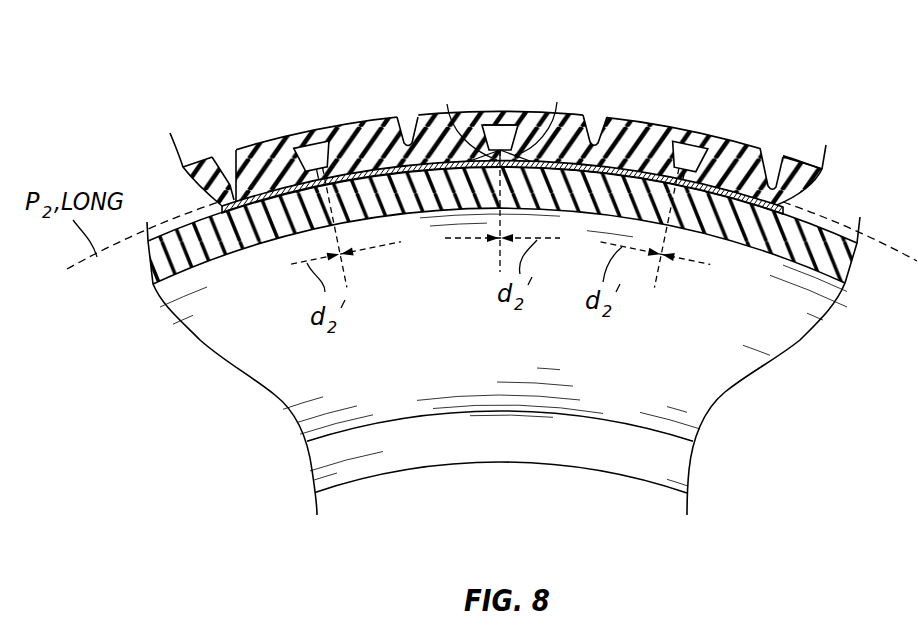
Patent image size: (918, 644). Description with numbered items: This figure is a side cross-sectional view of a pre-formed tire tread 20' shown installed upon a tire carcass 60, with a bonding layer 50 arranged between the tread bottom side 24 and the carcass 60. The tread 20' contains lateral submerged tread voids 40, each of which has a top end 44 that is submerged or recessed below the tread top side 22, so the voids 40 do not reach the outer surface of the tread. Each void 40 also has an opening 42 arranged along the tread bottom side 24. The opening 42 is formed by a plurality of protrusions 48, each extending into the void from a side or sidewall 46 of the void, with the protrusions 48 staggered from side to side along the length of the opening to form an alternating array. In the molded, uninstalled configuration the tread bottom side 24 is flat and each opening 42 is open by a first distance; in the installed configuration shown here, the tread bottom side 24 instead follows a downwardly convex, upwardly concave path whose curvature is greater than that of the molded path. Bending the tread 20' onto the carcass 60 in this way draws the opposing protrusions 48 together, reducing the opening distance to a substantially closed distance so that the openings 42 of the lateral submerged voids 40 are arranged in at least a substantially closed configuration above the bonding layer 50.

The tread 20' is at (816, 130).
The tread top side 22 is at (742, 142).
The tread bottom side 24 is at (770, 206).
The lateral submerged tread void 40 is at (512, 125).
The opening 42 is at (498, 160).
The top end 44 is at (495, 125).
The sidewall 46 is at (502, 118).
The protrusions 48 is at (548, 165).
The bonding layer 50 is at (785, 206).
The tire carcass 60 is at (852, 250).